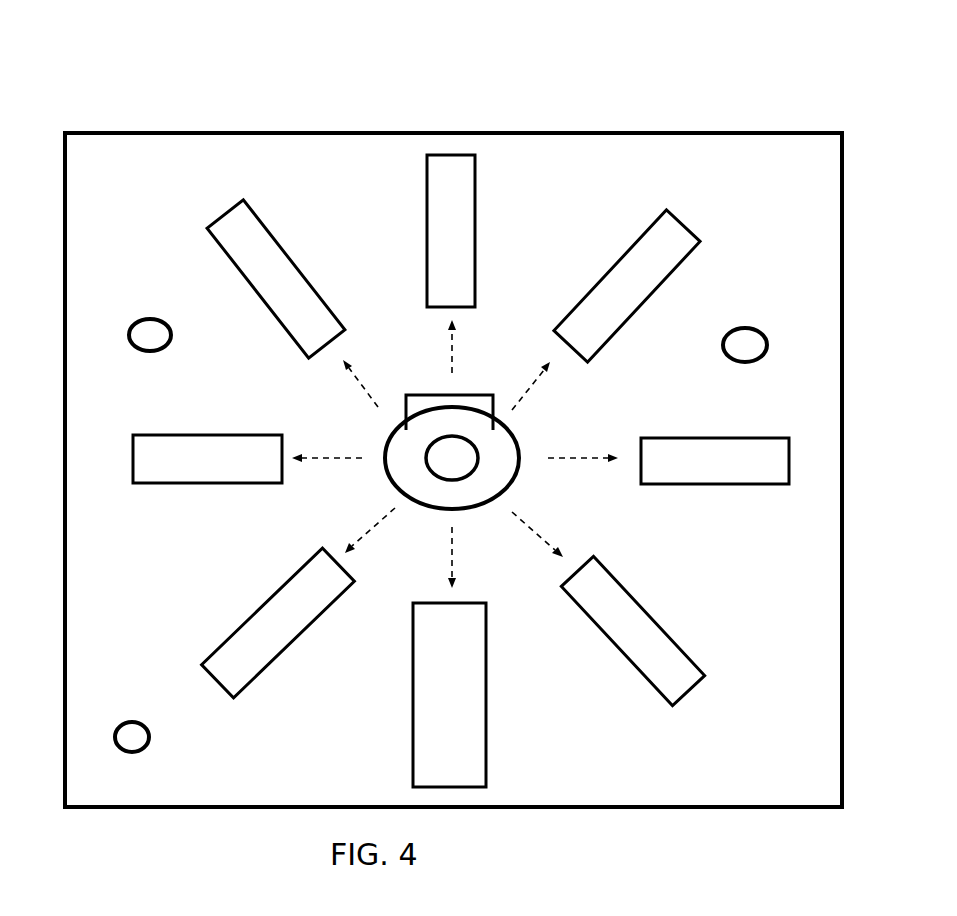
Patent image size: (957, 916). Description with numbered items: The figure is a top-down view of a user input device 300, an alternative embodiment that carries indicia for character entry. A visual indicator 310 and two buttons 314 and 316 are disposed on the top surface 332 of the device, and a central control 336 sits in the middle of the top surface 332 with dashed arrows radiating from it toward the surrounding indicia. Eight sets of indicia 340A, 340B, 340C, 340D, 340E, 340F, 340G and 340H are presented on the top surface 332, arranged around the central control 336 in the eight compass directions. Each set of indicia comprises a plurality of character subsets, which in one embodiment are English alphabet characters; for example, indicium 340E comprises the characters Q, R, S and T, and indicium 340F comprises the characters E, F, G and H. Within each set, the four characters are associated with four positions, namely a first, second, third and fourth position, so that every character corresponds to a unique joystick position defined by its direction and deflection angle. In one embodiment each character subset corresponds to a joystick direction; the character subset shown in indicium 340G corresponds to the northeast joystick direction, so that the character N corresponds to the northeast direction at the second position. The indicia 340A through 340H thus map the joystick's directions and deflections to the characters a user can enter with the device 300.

The user input device 300 is at (720, 92).
The visual indicator 310 is at (140, 723).
The button 314 is at (167, 322).
The button 316 is at (746, 328).
The top surface 332 is at (137, 571).
The central selector control 336 is at (497, 448).
The indicium 340A is at (238, 220).
The indicium 340B is at (153, 443).
The indicium 340C is at (245, 632).
The indicium 340D is at (468, 696).
The indicium 340E is at (600, 573).
The indicium 340F is at (703, 475).
The indicium 340G is at (680, 242).
The indicium 340H is at (458, 177).